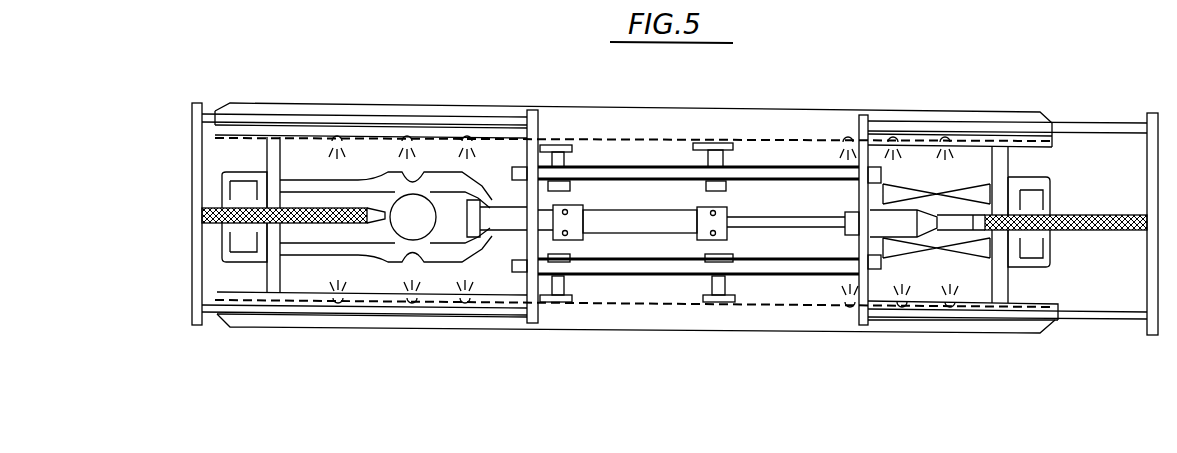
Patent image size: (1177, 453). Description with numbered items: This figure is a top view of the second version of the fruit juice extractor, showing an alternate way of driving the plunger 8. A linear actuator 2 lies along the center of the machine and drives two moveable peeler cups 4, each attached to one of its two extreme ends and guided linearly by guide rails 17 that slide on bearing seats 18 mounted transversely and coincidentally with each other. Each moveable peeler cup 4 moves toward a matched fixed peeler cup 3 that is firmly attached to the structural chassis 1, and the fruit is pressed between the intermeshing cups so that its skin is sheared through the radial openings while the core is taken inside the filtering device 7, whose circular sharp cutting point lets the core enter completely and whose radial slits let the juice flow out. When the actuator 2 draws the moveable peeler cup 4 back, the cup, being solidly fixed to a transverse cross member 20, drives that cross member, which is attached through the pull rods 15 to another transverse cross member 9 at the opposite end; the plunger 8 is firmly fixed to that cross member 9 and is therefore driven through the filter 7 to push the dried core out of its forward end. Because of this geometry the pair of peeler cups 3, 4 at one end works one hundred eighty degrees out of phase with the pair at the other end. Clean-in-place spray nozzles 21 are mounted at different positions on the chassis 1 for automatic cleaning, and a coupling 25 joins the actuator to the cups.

The structural chassis 1 is at (1015, 112).
The linear actuator 2 is at (628, 205).
The fixed peeler cup 3 is at (323, 187).
The moveable peeler cup 4 is at (470, 183).
The filtering device 7 is at (297, 205).
The plunger 8 is at (212, 230).
The transverse cross member 9 is at (192, 301).
The pull rods 15 is at (390, 122).
The guide rails 17 is at (842, 145).
The bearing seats 18 is at (735, 140).
The transverse cross member 20 is at (528, 110).
The clean-in-place spray nozzles 21 is at (947, 140).
The coupling 25 is at (558, 197).